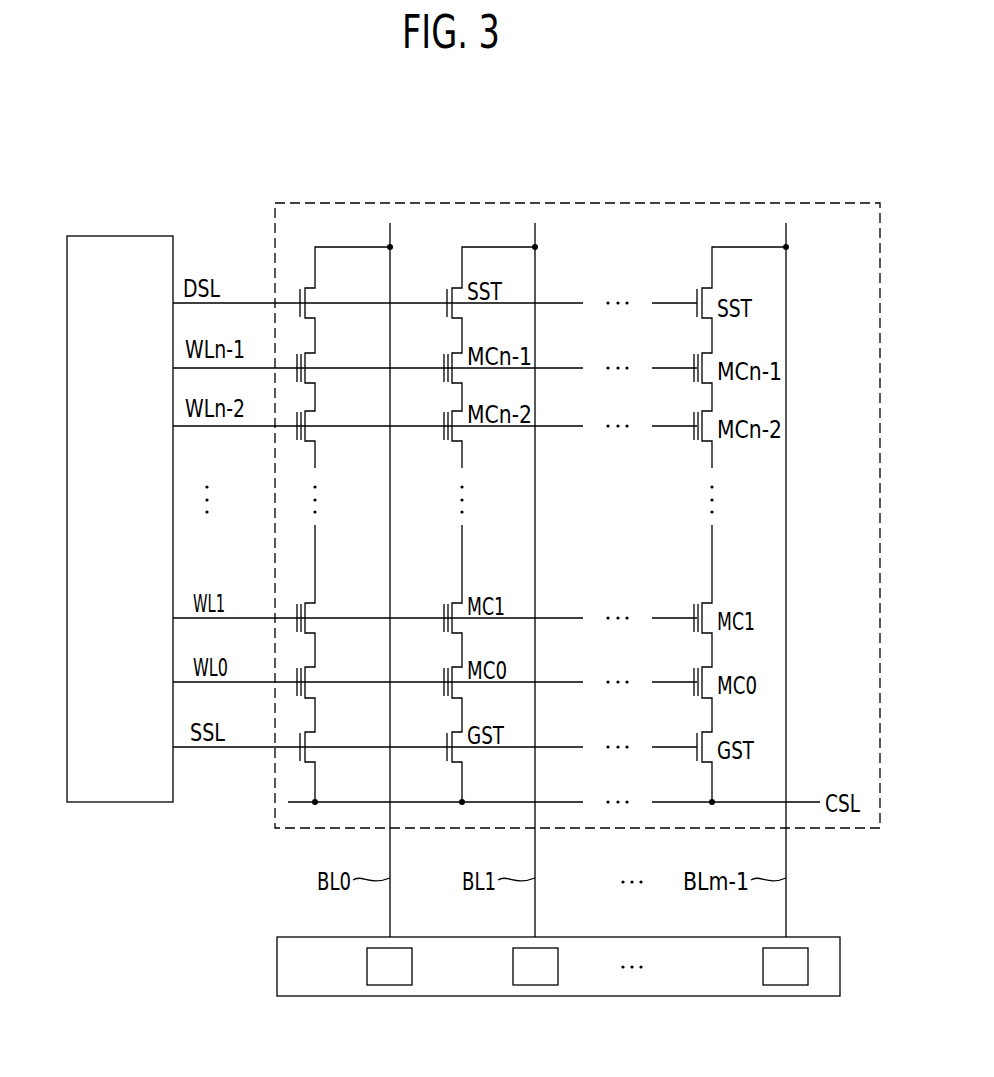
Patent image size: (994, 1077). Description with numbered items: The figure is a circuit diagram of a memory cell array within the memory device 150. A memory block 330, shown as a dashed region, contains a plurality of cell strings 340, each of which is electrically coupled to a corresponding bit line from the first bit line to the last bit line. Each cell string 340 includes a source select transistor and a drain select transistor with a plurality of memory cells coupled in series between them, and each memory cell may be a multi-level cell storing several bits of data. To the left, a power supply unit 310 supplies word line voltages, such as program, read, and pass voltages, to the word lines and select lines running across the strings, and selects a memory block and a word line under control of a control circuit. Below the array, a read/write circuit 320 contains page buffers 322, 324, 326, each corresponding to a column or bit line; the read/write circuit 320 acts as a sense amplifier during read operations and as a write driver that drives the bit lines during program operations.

The memory device 150 is at (862, 153).
The power supply unit 310 is at (118, 236).
The read/write circuit 320 is at (277, 966).
The page buffer 322 is at (367, 966).
The page buffer 324 is at (513, 966).
The page buffer 326 is at (763, 966).
The memory block 330 is at (672, 203).
The cell string 340 is at (303, 280).